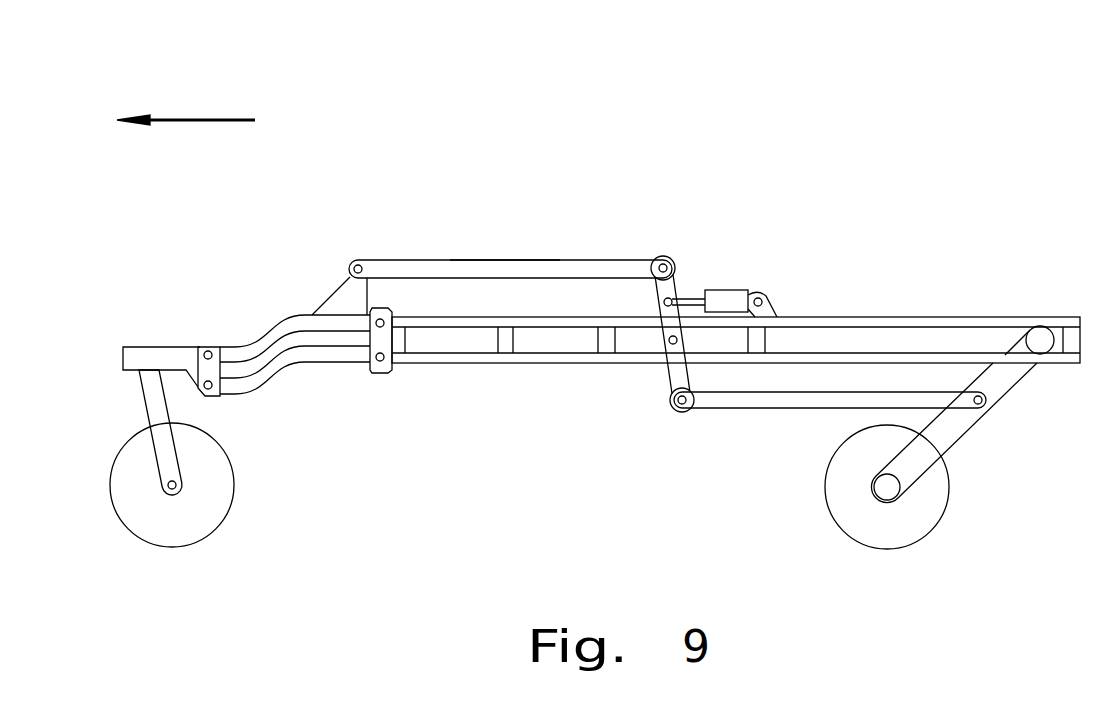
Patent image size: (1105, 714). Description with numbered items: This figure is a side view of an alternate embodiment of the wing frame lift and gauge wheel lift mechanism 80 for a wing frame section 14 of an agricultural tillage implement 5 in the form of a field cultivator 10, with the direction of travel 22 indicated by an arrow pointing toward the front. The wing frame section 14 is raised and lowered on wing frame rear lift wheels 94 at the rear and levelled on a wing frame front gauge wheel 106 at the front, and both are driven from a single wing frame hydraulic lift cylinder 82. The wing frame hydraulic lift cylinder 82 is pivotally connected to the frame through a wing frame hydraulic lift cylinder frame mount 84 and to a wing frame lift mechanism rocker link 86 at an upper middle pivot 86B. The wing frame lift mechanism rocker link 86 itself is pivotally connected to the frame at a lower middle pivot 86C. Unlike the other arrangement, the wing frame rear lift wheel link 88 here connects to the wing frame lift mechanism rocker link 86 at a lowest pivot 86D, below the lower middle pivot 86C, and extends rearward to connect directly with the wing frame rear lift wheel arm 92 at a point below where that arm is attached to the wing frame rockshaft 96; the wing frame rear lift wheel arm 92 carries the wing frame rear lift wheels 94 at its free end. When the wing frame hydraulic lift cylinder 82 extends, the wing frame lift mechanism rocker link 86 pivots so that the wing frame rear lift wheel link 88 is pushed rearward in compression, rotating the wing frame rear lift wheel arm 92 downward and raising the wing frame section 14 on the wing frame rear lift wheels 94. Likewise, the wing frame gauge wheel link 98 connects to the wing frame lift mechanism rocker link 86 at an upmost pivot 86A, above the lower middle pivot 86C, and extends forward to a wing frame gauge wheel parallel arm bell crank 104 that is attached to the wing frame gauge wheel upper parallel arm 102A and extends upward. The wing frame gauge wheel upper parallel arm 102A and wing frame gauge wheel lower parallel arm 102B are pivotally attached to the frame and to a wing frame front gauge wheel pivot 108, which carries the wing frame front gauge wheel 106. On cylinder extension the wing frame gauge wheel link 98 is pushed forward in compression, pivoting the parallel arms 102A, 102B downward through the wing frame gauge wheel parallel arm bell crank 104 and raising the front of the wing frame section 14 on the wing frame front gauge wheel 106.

The agricultural tillage implement 5 is at (676, 148).
The field cultivator 10 is at (748, 116).
The wing frame section 14 is at (905, 317).
The direction of travel 22 is at (200, 120).
The wing frame lift and gauge wheel lift mechanism 80 is at (452, 262).
The wing frame hydraulic lift cylinder 82 is at (738, 288).
The wing frame hydraulic lift cylinder frame mount 84 is at (768, 298).
The wing frame lift mechanism rocker link 86 is at (678, 277).
The upmost pivot 86A is at (662, 260).
The upper middle pivot 86B is at (662, 301).
The lower middle pivot 86C is at (670, 345).
The lowest pivot 86D is at (677, 410).
The wing frame rear lift wheel link 88 is at (803, 408).
The wing frame rear lift wheel arm 92 is at (1013, 387).
The wing frame rear lift wheels 94 is at (940, 507).
The wing frame rockshaft 96 is at (1045, 326).
The wing frame gauge wheel link 98 is at (538, 262).
The wing frame gauge wheel upper parallel arm 102A is at (263, 323).
The wing frame gauge wheel lower parallel arm 102B is at (267, 380).
The wing frame gauge wheel parallel arm bell crank 104 is at (350, 265).
The wing frame front gauge wheel 106 is at (112, 497).
The wing frame front gauge wheel pivot 108 is at (150, 347).